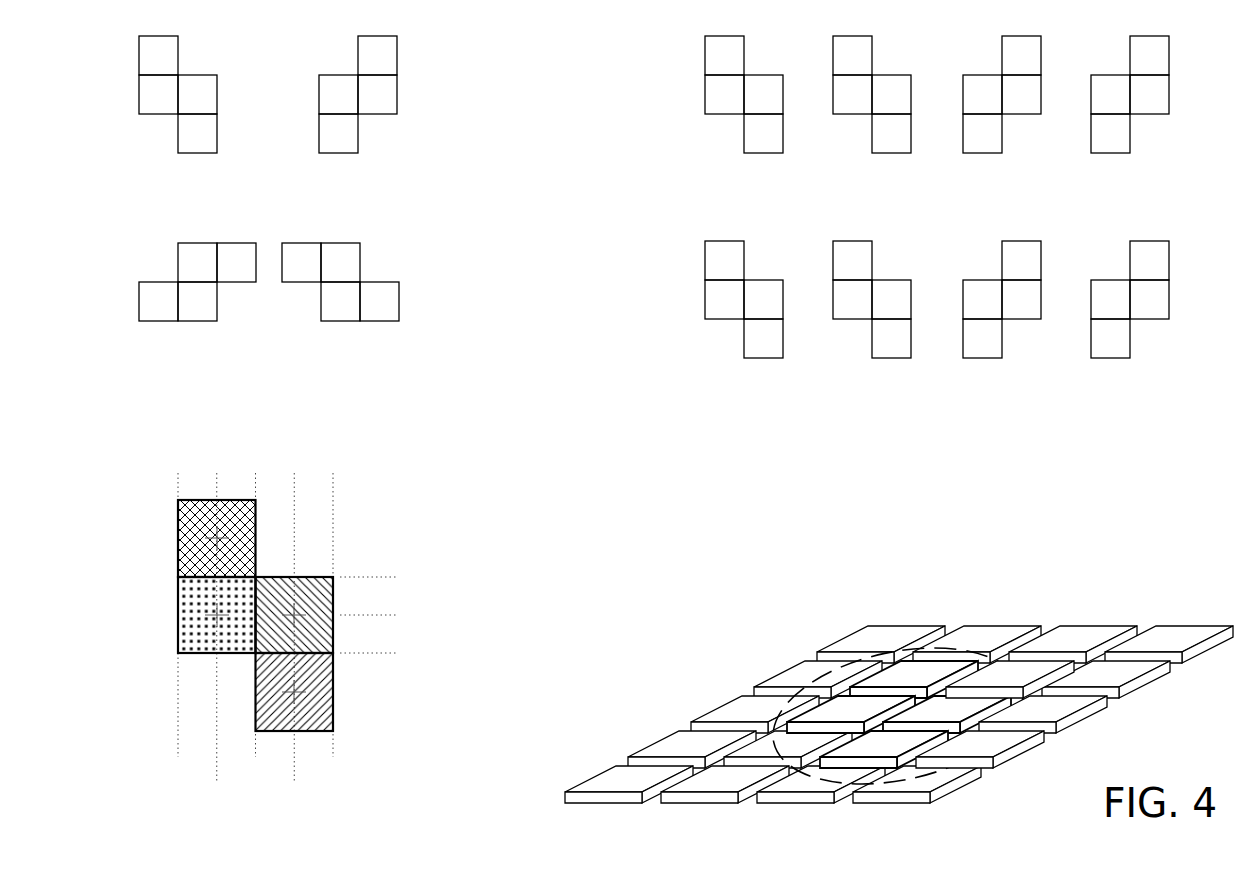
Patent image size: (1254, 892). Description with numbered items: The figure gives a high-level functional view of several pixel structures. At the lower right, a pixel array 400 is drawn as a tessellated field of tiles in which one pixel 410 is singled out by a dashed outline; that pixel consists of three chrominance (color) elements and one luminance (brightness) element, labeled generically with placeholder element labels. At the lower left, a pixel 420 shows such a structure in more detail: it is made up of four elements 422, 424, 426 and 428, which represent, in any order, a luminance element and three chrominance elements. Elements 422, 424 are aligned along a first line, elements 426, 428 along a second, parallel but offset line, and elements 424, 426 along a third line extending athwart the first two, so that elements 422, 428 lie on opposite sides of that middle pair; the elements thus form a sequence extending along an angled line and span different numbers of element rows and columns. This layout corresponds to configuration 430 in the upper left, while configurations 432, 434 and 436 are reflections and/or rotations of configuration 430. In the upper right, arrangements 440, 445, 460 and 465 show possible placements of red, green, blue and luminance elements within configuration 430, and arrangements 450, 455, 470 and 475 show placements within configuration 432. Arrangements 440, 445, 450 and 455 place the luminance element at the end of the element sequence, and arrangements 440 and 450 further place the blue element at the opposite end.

The pixel array 400 is at (899, 679).
The pixel 410 is at (974, 640).
The pixel 420 is at (311, 627).
The element 422 is at (188, 538).
The element 424 is at (188, 627).
The element 426 is at (322, 596).
The element 428 is at (322, 692).
The configuration 430 is at (178, 111).
The configuration 432 is at (358, 111).
The configuration 434 is at (197, 305).
The configuration 436 is at (340, 305).
The arrangement 440 is at (744, 111).
The arrangement 445 is at (872, 111).
The arrangement 450 is at (1002, 111).
The arrangement 455 is at (1130, 111).
The arrangement 460 is at (744, 316).
The arrangement 465 is at (872, 316).
The arrangement 470 is at (1002, 316).
The arrangement 475 is at (1130, 316).